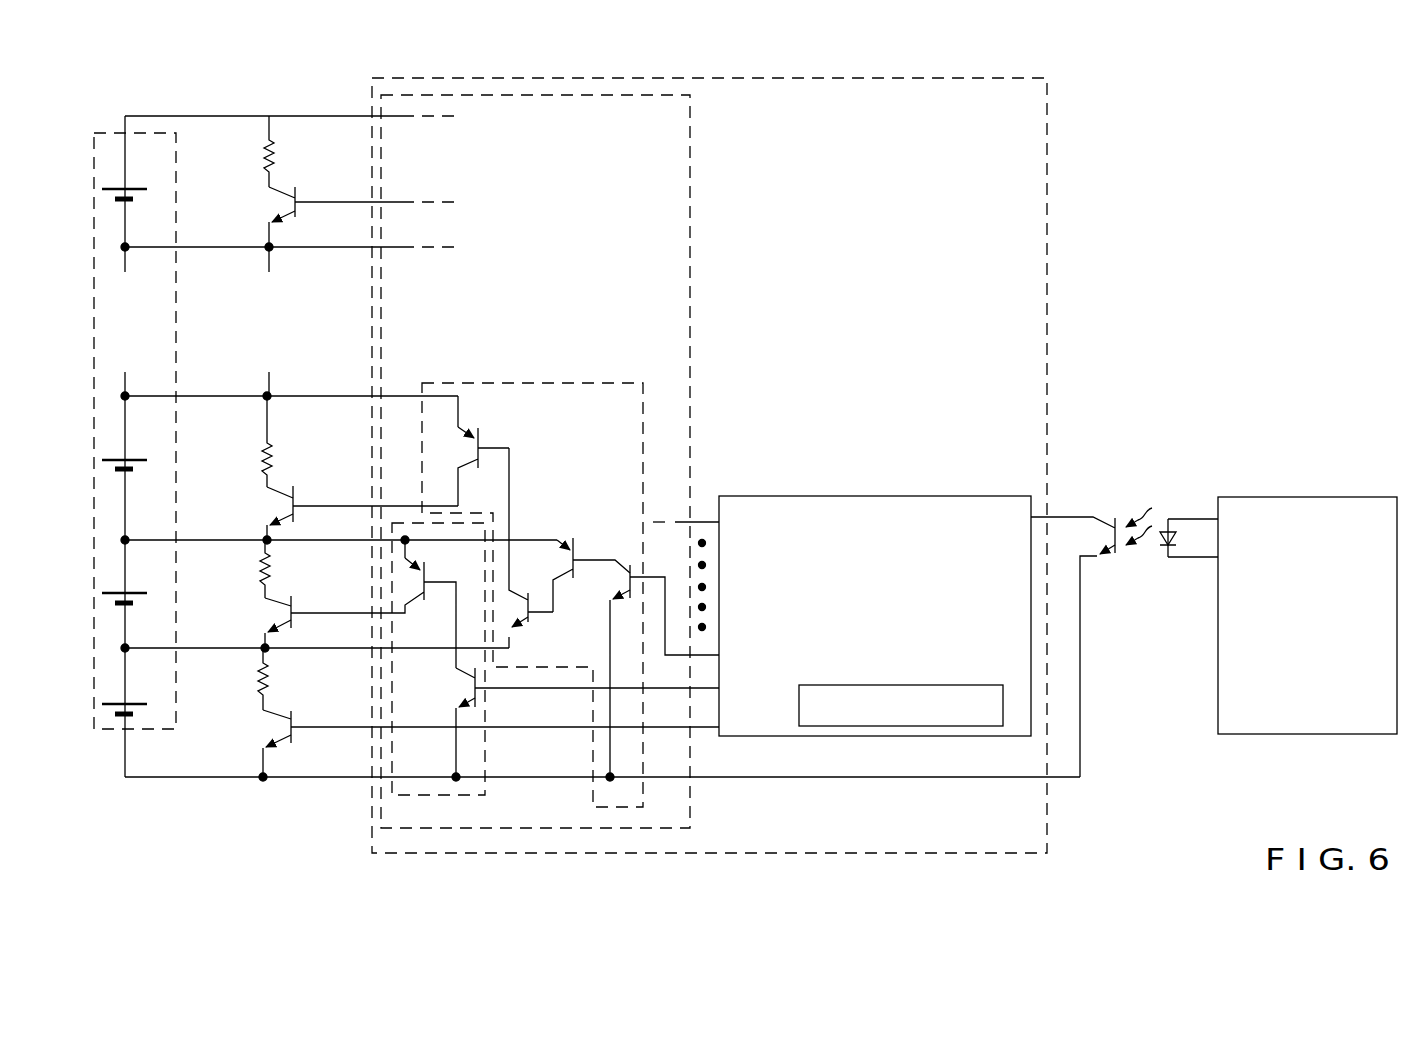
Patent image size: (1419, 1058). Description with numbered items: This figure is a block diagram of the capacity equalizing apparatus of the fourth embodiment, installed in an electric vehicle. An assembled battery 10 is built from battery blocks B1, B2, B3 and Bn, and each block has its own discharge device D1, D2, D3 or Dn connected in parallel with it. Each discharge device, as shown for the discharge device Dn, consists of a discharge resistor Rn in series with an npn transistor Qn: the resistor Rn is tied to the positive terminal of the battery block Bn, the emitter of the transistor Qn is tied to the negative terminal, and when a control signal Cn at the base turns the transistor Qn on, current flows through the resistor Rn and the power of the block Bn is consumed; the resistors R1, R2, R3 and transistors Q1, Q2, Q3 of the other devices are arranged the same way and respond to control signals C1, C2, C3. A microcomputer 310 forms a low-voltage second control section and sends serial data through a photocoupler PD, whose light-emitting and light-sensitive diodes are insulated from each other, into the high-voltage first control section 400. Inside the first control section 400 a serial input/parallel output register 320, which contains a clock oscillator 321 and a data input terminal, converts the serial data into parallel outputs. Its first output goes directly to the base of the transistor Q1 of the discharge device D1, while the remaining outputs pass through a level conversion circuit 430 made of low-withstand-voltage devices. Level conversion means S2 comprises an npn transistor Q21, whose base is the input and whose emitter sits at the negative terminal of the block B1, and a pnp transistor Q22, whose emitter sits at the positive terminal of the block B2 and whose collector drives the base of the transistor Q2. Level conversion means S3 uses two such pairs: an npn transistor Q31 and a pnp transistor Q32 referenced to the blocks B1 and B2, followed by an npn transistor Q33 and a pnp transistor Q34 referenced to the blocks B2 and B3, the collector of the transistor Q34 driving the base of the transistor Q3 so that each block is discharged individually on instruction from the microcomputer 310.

The assembled battery 10 is at (108, 733).
The battery block Bn is at (131, 190).
The battery block B3 is at (131, 460).
The battery block B2 is at (131, 593).
The battery block B1 is at (131, 704).
The discharge resistor Rn is at (253, 151).
The discharge resistor R3 is at (250, 439).
The discharge resistor R2 is at (249, 569).
The discharge resistor R1 is at (248, 679).
The npn transistor Qn is at (263, 219).
The npn transistor Q3 is at (261, 515).
The npn transistor Q2 is at (259, 624).
The npn transistor Q1 is at (259, 746).
The discharge device Dn is at (292, 160).
The discharge device D3 is at (290, 467).
The discharge device D2 is at (289, 584).
The discharge device D1 is at (289, 698).
The control signal Cn is at (305, 202).
The control signal C3 is at (306, 506).
The control signal C2 is at (312, 613).
The control signal C1 is at (330, 727).
The first control section 400 is at (537, 76).
The level conversion circuit 430 is at (691, 183).
The level conversion means S3 is at (606, 381).
The level conversion means S2 is at (487, 745).
The pnp transistor Q34 is at (495, 451).
The npn transistor Q33 is at (536, 555).
The pnp transistor Q32 is at (588, 559).
The npn transistor Q31 is at (642, 673).
The pnp transistor Q22 is at (428, 602).
The npn transistor Q21 is at (565, 724).
The serial input/parallel output register 320 is at (738, 496).
The clock oscillator 321 is at (908, 685).
The photocoupler PD is at (1124, 626).
The microcomputer 310 is at (1255, 497).